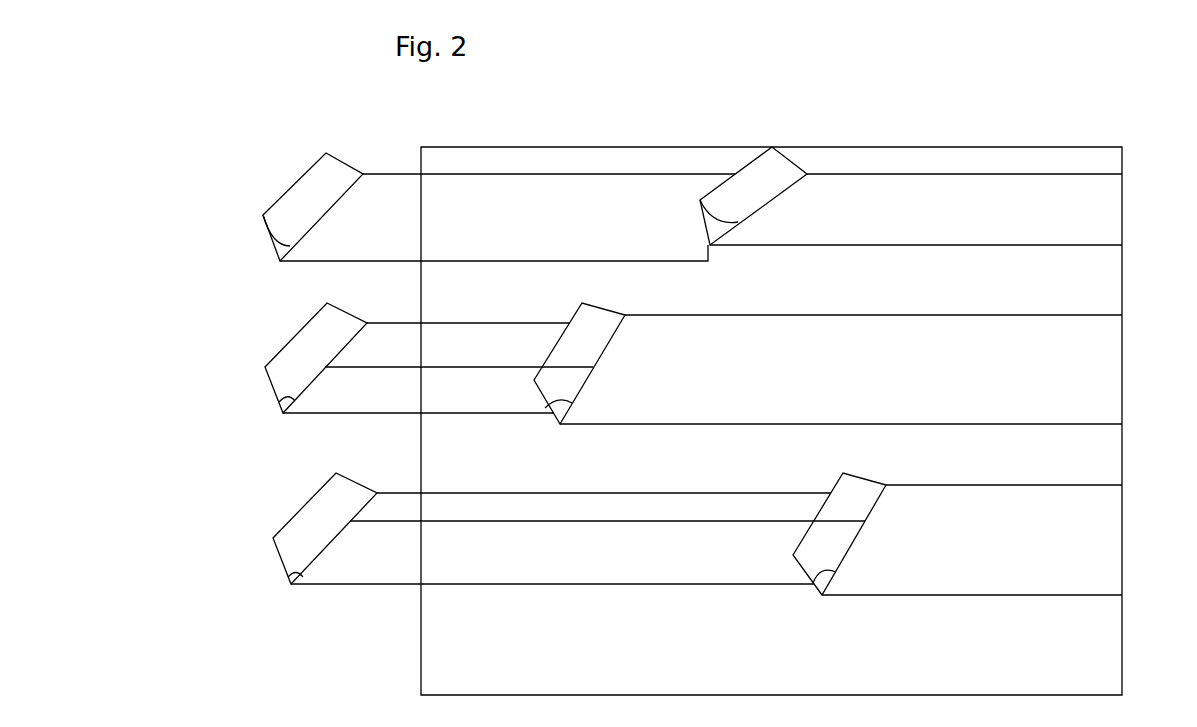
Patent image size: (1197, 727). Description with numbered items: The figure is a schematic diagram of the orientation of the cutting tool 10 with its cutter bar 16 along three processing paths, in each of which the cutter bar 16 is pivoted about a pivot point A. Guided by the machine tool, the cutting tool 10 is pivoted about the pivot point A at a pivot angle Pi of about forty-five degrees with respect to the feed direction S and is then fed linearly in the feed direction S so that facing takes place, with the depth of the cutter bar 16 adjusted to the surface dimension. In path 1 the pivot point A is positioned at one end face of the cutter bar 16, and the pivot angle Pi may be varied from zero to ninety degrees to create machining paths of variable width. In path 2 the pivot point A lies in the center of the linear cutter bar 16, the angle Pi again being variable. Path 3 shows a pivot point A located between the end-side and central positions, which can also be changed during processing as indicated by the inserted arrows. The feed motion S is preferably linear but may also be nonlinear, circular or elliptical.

The cutting tool 10 is at (311, 152).
The cutter bar 16 is at (272, 241).
The pivot point A is at (364, 173).
The pivot angle Pi is at (352, 256).
The feed direction S is at (1031, 175).
The path 1 is at (1156, 231).
The path 2 is at (1156, 386).
The path 3 is at (1161, 554).